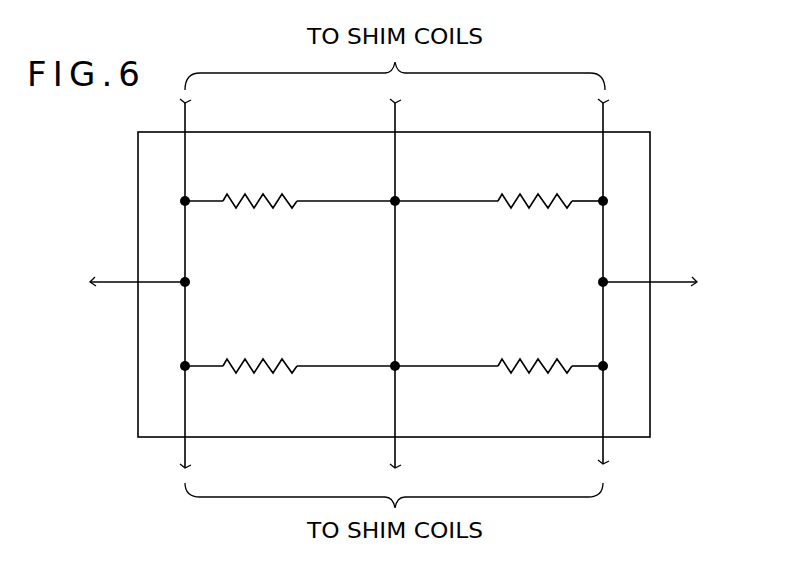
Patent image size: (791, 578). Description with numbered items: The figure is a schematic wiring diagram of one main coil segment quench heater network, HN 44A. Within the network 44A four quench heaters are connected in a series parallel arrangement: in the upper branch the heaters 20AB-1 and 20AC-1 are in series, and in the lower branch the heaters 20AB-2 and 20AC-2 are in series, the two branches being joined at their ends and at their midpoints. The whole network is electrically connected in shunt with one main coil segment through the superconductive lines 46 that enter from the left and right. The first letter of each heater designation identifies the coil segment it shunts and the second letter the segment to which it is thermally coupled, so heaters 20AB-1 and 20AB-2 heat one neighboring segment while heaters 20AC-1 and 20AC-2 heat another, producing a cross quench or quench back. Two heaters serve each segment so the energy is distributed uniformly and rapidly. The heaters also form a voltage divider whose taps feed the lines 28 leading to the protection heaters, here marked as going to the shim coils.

The lines 28 is at (392, 127).
The superconductive lines 46 is at (117, 280).
The heater network 44A is at (650, 175).
The quench heater 20AB-1 is at (254, 208).
The quench heater 20AC-1 is at (530, 208).
The quench heater 20AB-2 is at (236, 373).
The quench heater 20AC-2 is at (552, 373).